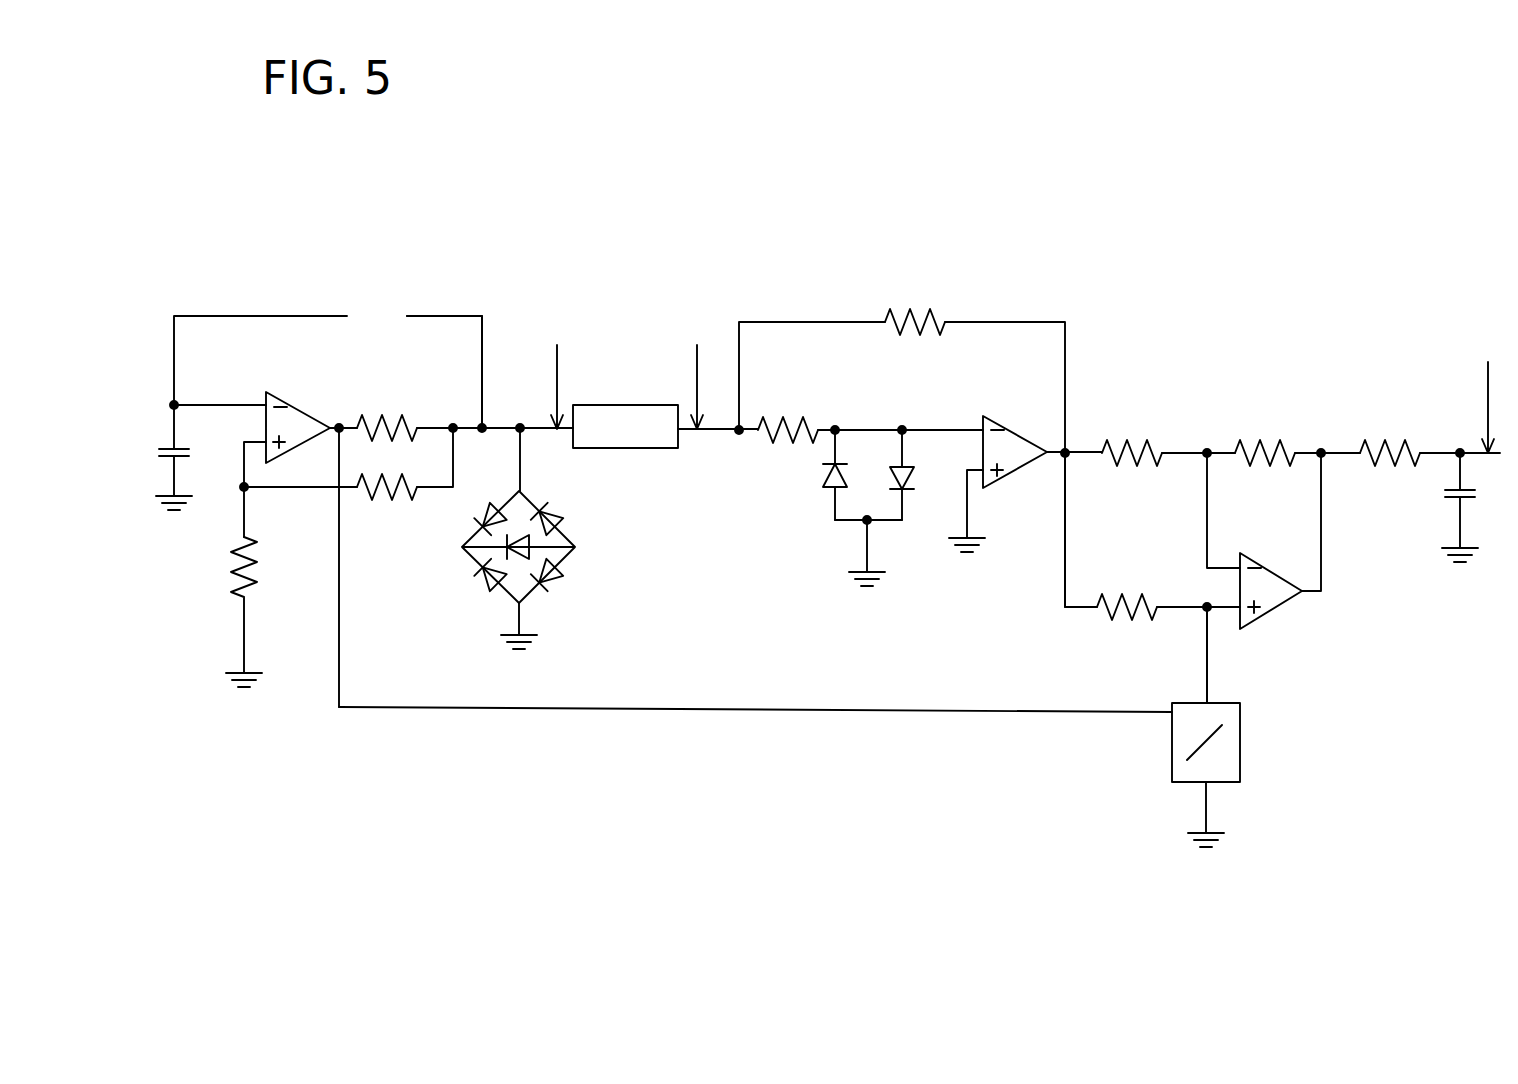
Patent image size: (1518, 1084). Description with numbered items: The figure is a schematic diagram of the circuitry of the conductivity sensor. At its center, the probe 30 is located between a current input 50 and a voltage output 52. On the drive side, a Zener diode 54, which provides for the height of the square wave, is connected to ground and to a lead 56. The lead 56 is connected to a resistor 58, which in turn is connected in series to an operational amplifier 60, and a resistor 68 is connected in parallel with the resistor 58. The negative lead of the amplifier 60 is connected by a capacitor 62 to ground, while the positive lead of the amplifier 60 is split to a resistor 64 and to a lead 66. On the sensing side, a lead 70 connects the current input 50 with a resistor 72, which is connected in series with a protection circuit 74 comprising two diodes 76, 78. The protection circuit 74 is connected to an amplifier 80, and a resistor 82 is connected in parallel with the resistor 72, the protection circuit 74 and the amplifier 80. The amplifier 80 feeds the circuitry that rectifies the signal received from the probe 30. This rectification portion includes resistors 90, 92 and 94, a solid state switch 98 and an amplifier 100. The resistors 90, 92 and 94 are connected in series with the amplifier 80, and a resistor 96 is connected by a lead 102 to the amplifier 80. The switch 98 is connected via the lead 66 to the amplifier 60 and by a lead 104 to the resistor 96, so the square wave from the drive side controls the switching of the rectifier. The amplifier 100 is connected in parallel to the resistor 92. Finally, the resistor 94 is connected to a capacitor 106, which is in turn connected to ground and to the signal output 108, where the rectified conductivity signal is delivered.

The probe 30 is at (625, 405).
The current input 50 is at (697, 315).
The voltage output 52 is at (558, 315).
The Zener diode 54 is at (483, 580).
The lead 56 is at (486, 427).
The resistor 58 is at (393, 415).
The operational amplifier 60 is at (297, 405).
The capacitor 62 is at (193, 453).
The resistor 64 is at (233, 577).
The lead 66 is at (652, 707).
The resistor 68 is at (390, 497).
The lead 70 is at (712, 440).
The resistor 72 is at (795, 428).
The protection circuit 74 is at (843, 522).
The diode 76 is at (822, 470).
The diode 78 is at (913, 478).
The amplifier 80 is at (1015, 430).
The resistor 82 is at (917, 320).
The resistor 90 is at (1125, 445).
The resistor 92 is at (1262, 445).
The resistor 94 is at (1388, 445).
The resistor 96 is at (1127, 612).
The solid state switch 98 is at (1240, 745).
The amplifier 100 is at (1273, 608).
The lead 102 is at (1065, 538).
The lead 104 is at (1207, 653).
The capacitor 106 is at (1443, 492).
The signal output 108 is at (1488, 380).